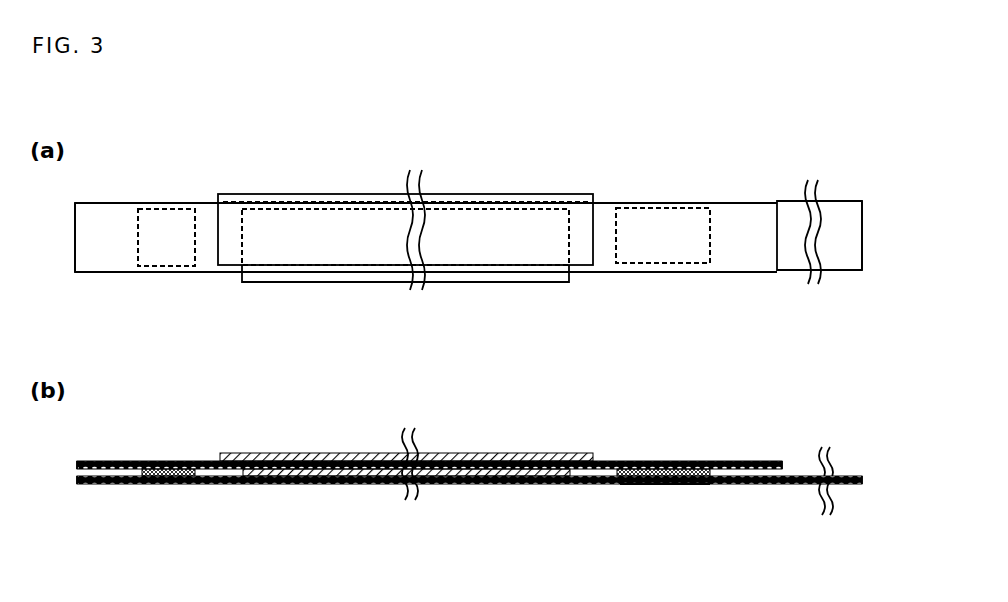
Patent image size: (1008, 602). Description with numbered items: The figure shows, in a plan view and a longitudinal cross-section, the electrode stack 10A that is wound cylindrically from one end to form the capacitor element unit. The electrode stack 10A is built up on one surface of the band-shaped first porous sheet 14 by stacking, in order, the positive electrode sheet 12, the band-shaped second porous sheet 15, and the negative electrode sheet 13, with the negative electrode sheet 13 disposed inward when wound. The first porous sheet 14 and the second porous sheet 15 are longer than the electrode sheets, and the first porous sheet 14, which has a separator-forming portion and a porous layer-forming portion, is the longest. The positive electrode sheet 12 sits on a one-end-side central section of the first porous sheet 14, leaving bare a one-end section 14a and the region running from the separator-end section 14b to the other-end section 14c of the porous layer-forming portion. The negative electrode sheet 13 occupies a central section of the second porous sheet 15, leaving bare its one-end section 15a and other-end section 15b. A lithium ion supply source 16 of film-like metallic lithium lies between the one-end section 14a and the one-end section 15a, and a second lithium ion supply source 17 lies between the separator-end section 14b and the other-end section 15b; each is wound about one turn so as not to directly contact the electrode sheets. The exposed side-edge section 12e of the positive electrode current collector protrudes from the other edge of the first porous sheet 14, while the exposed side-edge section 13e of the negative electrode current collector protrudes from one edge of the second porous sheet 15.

The electrode stack 10A is at (782, 192).
The positive electrode sheet 12 is at (313, 210).
The side-edge section 12e is at (312, 277).
The negative electrode sheet 13 is at (505, 263).
The side-edge section 13e is at (495, 195).
The first porous sheet 14 is at (793, 272).
The one-end section 14a is at (132, 485).
The separator-end section 14b is at (707, 484).
The other-end section 14c is at (847, 262).
The second porous sheet 15 is at (732, 202).
The one-end section 15a is at (127, 270).
The other-end section 15b is at (670, 272).
The lithium ion supply source 16 is at (158, 210).
The lithium ion supply source 17 is at (648, 208).